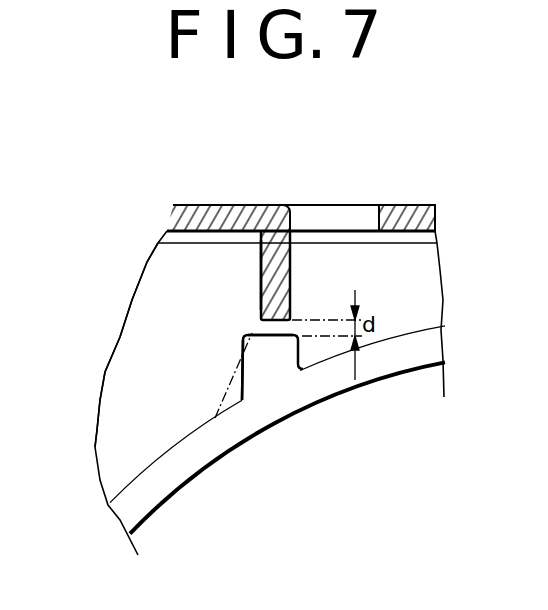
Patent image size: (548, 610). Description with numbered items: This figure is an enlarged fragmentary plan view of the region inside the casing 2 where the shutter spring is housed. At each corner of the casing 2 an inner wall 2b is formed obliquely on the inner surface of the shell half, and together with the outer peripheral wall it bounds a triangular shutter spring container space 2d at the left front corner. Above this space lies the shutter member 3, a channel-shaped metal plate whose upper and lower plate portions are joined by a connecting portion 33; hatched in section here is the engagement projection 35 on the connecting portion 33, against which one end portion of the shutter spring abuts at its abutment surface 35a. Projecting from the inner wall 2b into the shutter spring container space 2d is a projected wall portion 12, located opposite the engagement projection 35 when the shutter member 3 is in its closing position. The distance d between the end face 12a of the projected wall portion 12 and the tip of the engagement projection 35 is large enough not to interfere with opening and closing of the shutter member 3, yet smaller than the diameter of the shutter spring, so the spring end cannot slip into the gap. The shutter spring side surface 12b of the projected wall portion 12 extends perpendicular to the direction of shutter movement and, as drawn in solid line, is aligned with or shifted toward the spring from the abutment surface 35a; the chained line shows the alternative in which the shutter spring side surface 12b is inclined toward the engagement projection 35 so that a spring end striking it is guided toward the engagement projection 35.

The casing 2 is at (88, 441).
The inner wall 2b is at (177, 470).
The shutter spring container space 2d is at (131, 360).
The shutter member 3 is at (207, 192).
The connecting portion 33 is at (403, 205).
The engagement projection 35 is at (290, 270).
The abutment surface 35a is at (262, 270).
The projected wall portion 12 is at (304, 347).
The end face 12a is at (252, 335).
The shutter spring side surface 12b is at (238, 382).